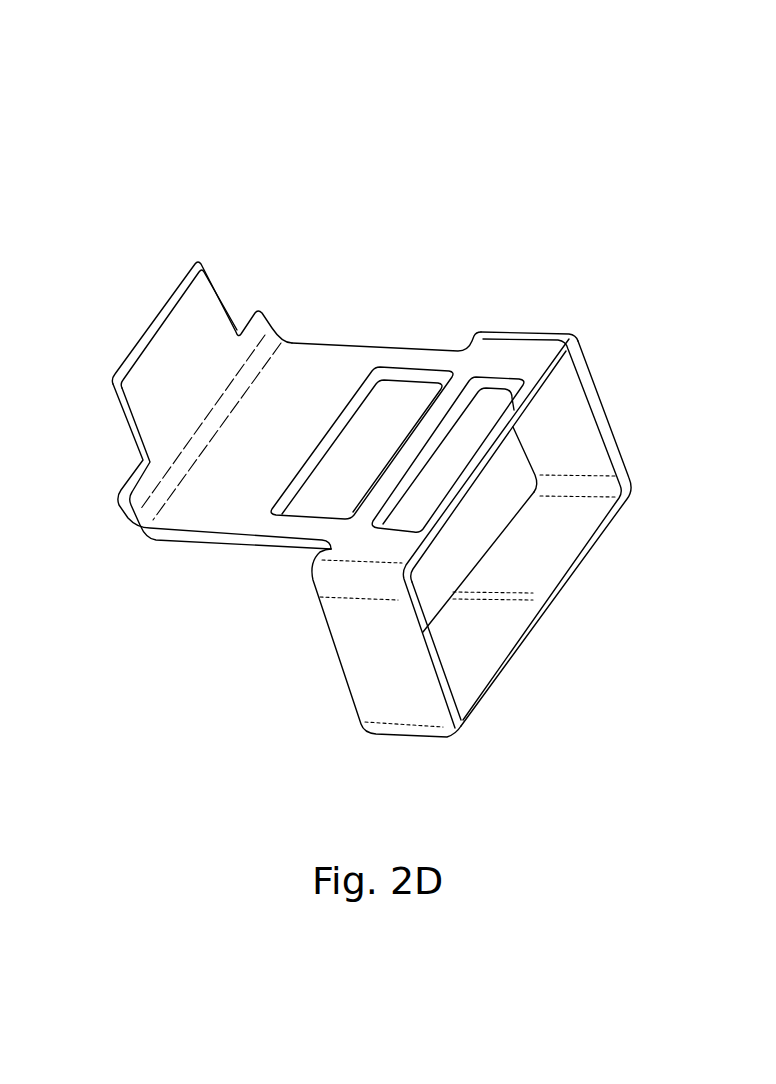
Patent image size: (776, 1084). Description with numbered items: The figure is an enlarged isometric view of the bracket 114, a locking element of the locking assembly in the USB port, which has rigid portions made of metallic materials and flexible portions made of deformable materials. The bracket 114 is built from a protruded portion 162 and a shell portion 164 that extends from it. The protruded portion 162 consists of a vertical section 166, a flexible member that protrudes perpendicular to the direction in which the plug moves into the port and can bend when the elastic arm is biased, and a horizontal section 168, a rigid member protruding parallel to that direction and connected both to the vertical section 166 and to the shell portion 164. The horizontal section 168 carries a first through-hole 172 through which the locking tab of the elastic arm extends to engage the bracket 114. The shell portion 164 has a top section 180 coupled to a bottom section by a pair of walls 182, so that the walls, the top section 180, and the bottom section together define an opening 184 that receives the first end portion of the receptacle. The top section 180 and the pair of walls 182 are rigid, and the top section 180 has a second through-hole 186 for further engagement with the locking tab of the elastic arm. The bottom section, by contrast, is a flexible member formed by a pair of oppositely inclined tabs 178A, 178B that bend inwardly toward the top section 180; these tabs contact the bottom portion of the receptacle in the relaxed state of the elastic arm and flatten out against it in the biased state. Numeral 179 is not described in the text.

The bracket 114 is at (176, 210).
The protruded portion 162 is at (216, 541).
The shell portion 164 is at (332, 672).
The vertical section 166 is at (214, 310).
The horizontal section 168 is at (333, 372).
The first through-hole 172 is at (348, 449).
The oppositely inclined tab 178A is at (480, 652).
The oppositely inclined tab 178B is at (602, 502).
The bottom wall 179 is at (555, 540).
The top section 180 is at (545, 344).
The pair of walls 182 is at (583, 422).
The opening 184 is at (503, 492).
The second through-hole 186 is at (477, 417).